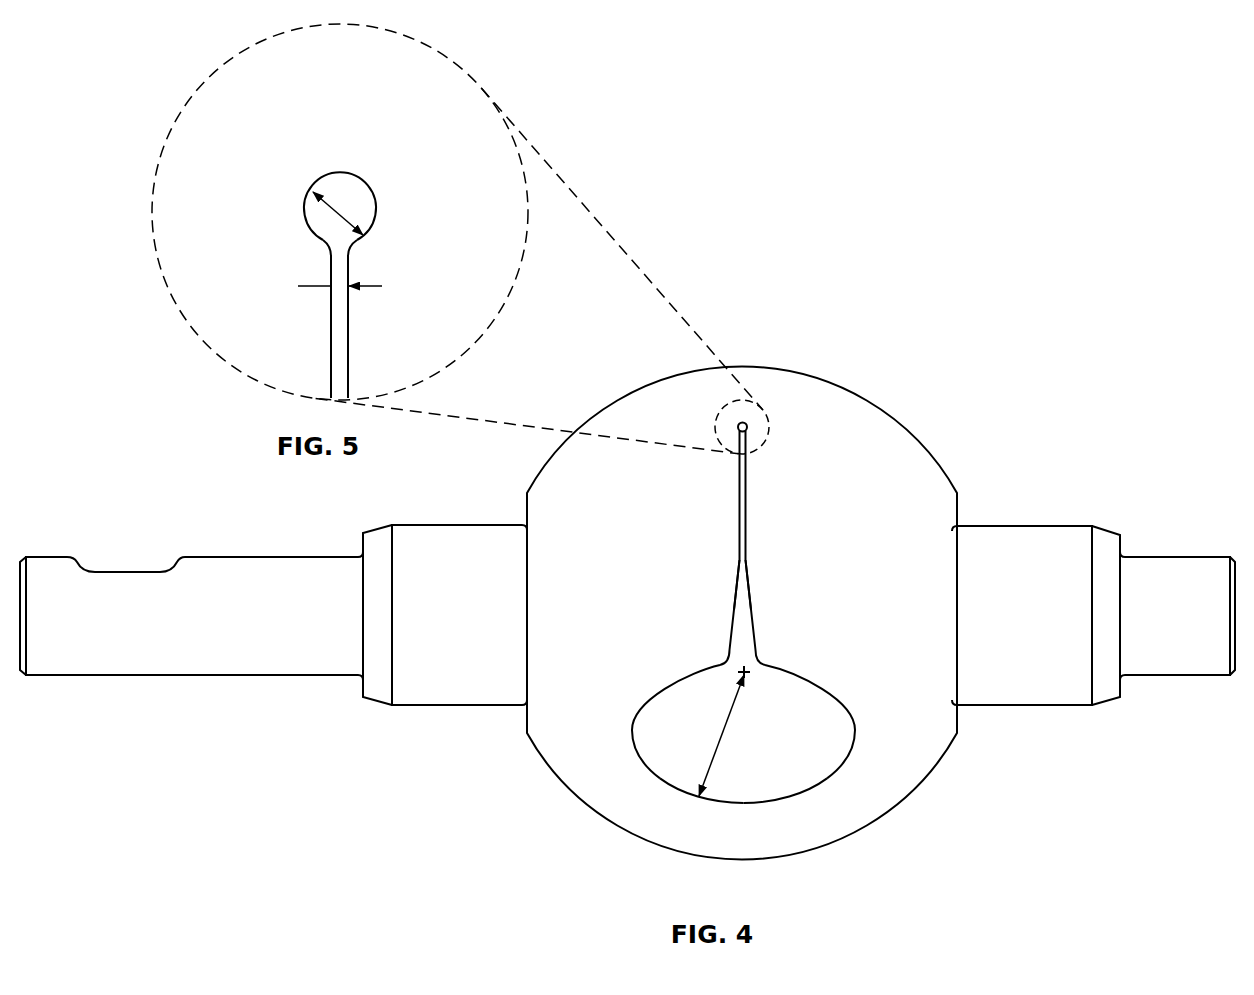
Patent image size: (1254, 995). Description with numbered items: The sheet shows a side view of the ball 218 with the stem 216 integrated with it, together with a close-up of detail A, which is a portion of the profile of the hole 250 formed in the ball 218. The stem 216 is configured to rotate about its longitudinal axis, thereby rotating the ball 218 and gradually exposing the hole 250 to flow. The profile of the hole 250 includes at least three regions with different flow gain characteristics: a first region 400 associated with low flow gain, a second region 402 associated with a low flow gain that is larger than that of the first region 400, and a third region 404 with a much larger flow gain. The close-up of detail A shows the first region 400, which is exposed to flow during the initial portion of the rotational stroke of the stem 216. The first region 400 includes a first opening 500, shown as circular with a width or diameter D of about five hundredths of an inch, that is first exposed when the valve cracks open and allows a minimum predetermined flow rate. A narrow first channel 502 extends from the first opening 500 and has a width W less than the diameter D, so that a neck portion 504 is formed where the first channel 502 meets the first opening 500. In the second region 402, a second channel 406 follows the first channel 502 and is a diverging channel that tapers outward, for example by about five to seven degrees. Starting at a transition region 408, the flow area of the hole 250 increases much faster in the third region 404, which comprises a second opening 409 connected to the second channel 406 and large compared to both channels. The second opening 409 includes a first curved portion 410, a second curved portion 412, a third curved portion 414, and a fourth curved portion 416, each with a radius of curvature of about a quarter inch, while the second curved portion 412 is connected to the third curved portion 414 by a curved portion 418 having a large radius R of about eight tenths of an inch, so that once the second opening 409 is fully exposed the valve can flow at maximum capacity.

In FIG. 4, the stem 216 is at (1045, 526).
In FIG. 4, the ball 218 is at (845, 390).
In FIG. 4, the hole 250 is at (736, 549).
In FIG. 4, the first region 400 is at (772, 424).
In FIG. 5, the first region 400 is at (322, 263).
In FIG. 4, the second region 402 is at (770, 495).
In FIG. 4, the third region 404 is at (746, 772).
In FIG. 4, the second channel 406 is at (733, 614).
In FIG. 4, the transition region 408 is at (726, 654).
In FIG. 4, the second opening 409 is at (739, 777).
In FIG. 4, the first curved portion 410 is at (834, 709).
In FIG. 4, the second curved portion 412 is at (832, 761).
In FIG. 4, the third curved portion 414 is at (643, 764).
In FIG. 4, the fourth curved portion 416 is at (653, 703).
In FIG. 4, the curved portion 418 is at (687, 798).
In FIG. 5, the first opening 500 is at (369, 178).
In FIG. 4, the first channel 502 is at (736, 469).
In FIG. 5, the first channel 502 is at (349, 317).
In FIG. 5, the neck portion 504 is at (326, 248).
In FIG. 4, the detail A is at (722, 404).
In FIG. 4, the radius R is at (727, 724).
In FIG. 5, the diameter D is at (335, 210).
In FIG. 5, the width W is at (316, 288).